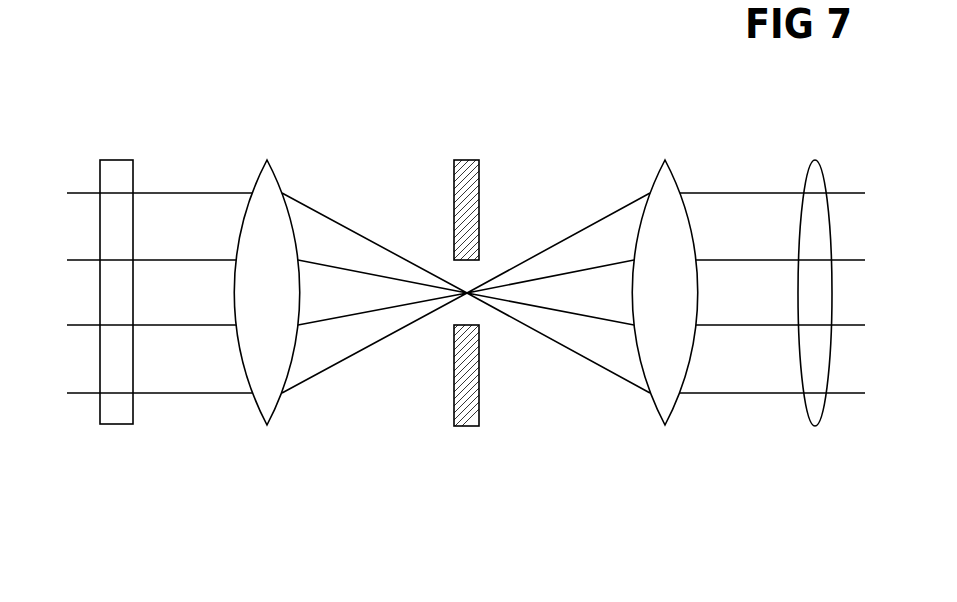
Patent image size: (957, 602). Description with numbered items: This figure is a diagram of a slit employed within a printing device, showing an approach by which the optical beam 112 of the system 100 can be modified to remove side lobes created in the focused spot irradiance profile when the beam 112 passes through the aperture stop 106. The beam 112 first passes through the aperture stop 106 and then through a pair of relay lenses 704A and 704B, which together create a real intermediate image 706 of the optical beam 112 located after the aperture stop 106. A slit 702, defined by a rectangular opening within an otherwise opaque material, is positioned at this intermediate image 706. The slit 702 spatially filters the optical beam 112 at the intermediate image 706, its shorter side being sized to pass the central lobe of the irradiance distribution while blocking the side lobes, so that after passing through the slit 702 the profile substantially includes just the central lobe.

The optical system 100 is at (156, 531).
The aperture stop 106 is at (122, 424).
The relay lens 704A is at (267, 160).
The relay lens 704B is at (665, 160).
The slit 702 is at (466, 427).
The real intermediate image 706 is at (467, 295).
The optical beam 112 is at (806, 172).